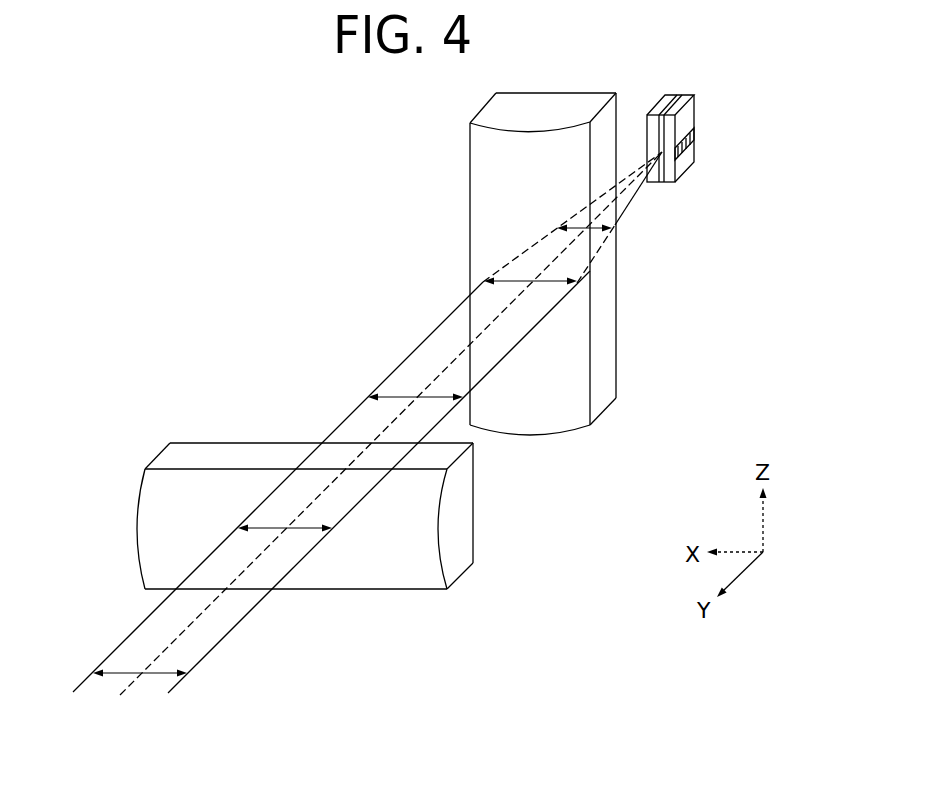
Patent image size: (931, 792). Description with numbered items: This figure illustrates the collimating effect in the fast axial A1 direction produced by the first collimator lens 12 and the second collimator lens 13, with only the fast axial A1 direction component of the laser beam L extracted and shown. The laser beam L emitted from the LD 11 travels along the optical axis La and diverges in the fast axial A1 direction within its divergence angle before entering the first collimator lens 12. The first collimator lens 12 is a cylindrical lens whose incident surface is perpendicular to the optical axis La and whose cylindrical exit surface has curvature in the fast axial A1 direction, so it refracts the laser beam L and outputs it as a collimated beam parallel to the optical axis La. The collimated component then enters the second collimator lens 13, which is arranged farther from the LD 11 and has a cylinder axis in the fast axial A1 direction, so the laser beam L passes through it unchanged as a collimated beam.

The LD 11 is at (647, 117).
The first collimator lens 12 is at (469, 150).
The second collimator lens 13 is at (163, 451).
The laser beam L is at (353, 410).
The optical axis La is at (177, 636).
The fast axis A1 is at (545, 283).